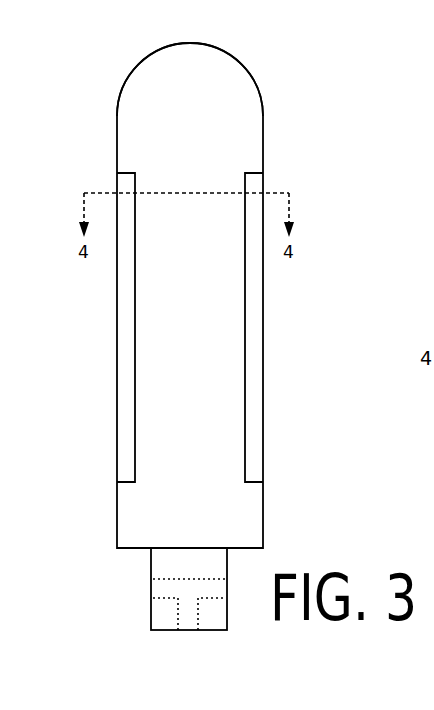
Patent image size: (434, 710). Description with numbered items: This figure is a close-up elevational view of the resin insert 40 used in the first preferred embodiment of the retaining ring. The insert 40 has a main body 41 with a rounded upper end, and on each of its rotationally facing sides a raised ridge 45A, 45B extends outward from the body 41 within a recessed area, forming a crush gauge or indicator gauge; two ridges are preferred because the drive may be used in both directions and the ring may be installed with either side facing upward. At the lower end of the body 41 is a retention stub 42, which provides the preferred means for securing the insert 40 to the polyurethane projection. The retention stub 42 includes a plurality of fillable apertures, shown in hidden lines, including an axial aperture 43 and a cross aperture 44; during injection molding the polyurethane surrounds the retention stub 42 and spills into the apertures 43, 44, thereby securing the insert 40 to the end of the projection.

The resin insert 40 is at (268, 75).
The body 41 is at (253, 117).
The retention stub 42 is at (217, 619).
The axial aperture 43 is at (188, 628).
The cross aperture 44 is at (152, 592).
The raised ridge 45A is at (117, 308).
The raised ridge 45B is at (262, 317).